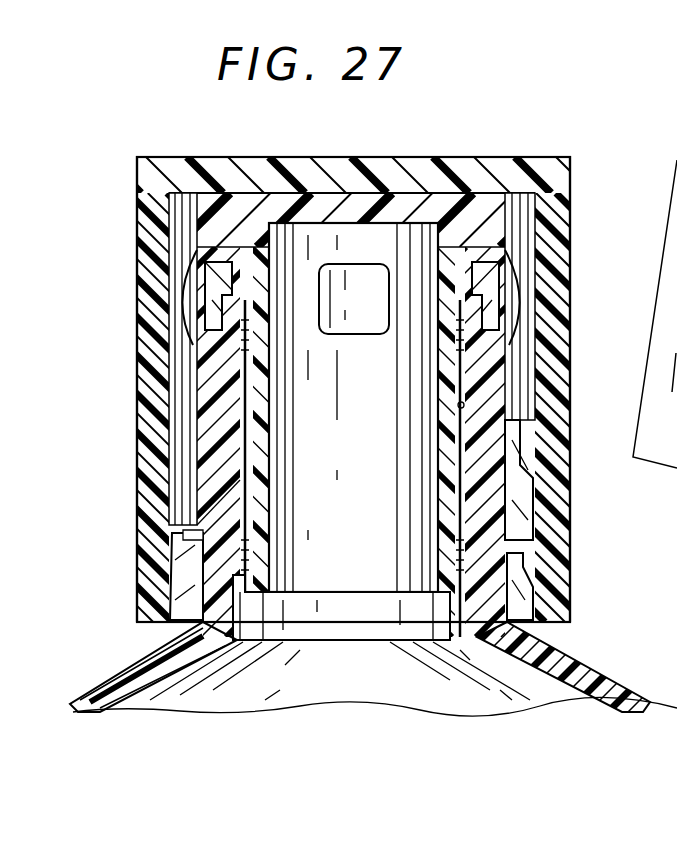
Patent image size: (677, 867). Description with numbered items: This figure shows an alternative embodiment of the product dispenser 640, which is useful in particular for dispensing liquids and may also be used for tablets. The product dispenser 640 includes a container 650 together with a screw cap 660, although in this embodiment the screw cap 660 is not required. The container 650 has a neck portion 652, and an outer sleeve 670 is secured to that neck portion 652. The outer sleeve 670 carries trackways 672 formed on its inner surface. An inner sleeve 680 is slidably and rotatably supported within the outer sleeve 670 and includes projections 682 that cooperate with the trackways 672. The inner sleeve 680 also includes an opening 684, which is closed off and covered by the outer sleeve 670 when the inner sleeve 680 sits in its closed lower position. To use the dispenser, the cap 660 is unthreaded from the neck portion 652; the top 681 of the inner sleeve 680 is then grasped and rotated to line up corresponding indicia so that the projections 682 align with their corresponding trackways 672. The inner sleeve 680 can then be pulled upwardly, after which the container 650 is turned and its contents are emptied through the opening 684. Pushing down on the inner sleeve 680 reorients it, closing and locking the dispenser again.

The product dispenser 640 is at (500, 138).
The container 650 is at (540, 663).
The neck portion 652 is at (523, 347).
The screw cap 660 is at (295, 160).
The outer sleeve 670 is at (513, 250).
The trackways 672 is at (465, 405).
The inner sleeve 680 is at (487, 202).
The top 681 is at (233, 203).
The projections 682 is at (198, 622).
The opening 684 is at (347, 267).